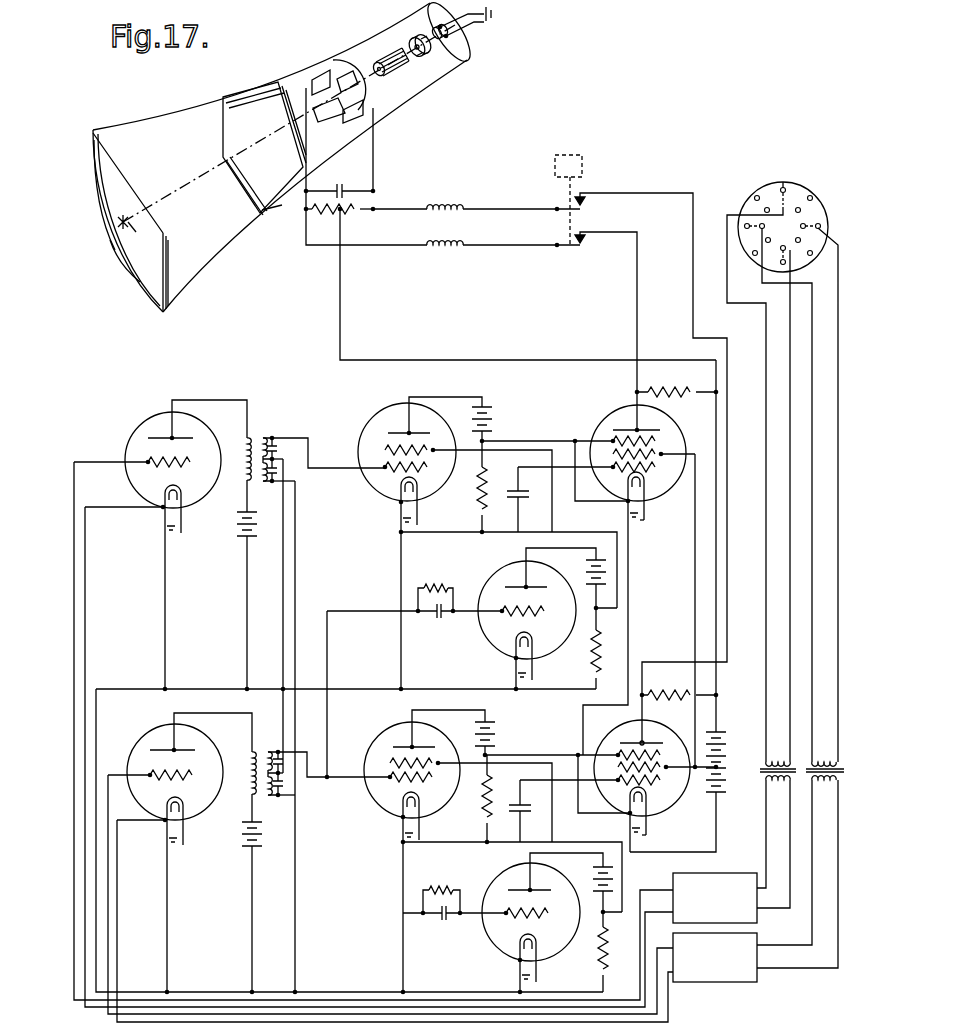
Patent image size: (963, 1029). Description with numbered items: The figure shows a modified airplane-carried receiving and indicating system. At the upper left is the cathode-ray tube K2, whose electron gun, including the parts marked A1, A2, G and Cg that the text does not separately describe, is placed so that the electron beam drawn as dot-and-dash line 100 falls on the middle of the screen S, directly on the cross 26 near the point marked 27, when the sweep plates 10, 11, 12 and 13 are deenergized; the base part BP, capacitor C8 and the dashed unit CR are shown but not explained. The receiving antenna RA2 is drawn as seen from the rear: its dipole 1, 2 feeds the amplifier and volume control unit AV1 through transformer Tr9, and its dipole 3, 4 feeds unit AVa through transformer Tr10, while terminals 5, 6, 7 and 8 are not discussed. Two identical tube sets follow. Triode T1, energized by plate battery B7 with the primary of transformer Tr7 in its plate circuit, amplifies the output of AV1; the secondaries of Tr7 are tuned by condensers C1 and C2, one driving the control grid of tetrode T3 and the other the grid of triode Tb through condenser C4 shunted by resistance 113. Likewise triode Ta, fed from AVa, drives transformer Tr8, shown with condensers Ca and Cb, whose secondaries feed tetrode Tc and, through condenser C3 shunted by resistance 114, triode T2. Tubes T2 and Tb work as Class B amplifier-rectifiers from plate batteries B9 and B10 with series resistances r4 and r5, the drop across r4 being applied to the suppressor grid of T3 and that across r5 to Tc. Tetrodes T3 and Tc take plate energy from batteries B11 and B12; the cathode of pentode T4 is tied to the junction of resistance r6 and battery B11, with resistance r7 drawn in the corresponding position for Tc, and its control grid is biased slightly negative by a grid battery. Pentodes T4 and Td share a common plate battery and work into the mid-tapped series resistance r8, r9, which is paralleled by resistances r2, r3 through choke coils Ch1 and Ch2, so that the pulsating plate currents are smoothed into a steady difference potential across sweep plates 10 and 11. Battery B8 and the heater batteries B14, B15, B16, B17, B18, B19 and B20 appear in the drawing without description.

The cathode-ray tube K2 is at (142, 122).
The second anode plate A2 is at (225, 133).
The electron beam 100 is at (180, 185).
The axis point 27 is at (121, 220).
The cross 26 is at (135, 228).
The screen S is at (136, 266).
The base plate BP is at (277, 208).
The sweep plate 10 is at (311, 86).
The sweep plate 12 is at (350, 75).
The sweep plate 11 is at (363, 107).
The sweep plate 13 is at (327, 116).
The first anode A1 is at (398, 77).
The grid G is at (425, 58).
The cathode Cg is at (448, 38).
The capacitor C8 is at (340, 183).
The resistance unit r2 is at (329, 217).
The resistance unit r3 is at (362, 218).
The choke coil Ch2 is at (476, 197).
The choke coil Ch1 is at (443, 228).
The control relay CR is at (569, 192).
The receiving antenna RA2 is at (797, 163).
The dipole terminal 1 is at (782, 177).
The dipole terminal 2 is at (783, 264).
The dipole terminal 3 is at (747, 228).
The dipole terminal 4 is at (820, 228).
The socket pin 5 is at (757, 198).
The socket pin 6 is at (810, 254).
The socket pin 7 is at (755, 254).
The socket pin 8 is at (810, 198).
The transformer Tr9 is at (765, 835).
The transformer Tr10 is at (800, 865).
The amplifier-volume control unit AV1 is at (727, 874).
The amplifier-volume control unit AVa is at (758, 934).
The triode amplifying tube T1 is at (203, 428).
The transformer Tr7 is at (253, 444).
The condenser C1 is at (278, 449).
The condenser C2 is at (282, 477).
The plate battery B7 is at (240, 527).
The tetrode T3 is at (380, 426).
The plate battery B11 is at (486, 425).
The heater battery B17 is at (417, 517).
The resistance unit r6 is at (471, 487).
The pentode T4 is at (608, 425).
The series resistance r8 is at (677, 385).
The heater battery B19 is at (637, 525).
The triode amplifier T2 is at (498, 573).
The plate battery B9 is at (595, 573).
The series resistance r4 is at (586, 648).
The condenser C3 is at (391, 623).
The resistance unit 114 is at (435, 588).
The heater battery B15 is at (533, 669).
The triode amplifying tube Ta is at (207, 742).
The heater battery B14 is at (181, 841).
The transformer Tr8 is at (259, 757).
The capacitor Ca is at (279, 751).
The capacitor Cb is at (288, 791).
The battery B8 is at (242, 837).
The tetrode Tc is at (388, 734).
The plate battery B12 is at (490, 739).
The heater battery B18 is at (418, 831).
The resistor r7 is at (475, 799).
The pentode Td is at (614, 737).
The series resistance r9 is at (679, 689).
The heater battery B20 is at (646, 833).
The triode amplifier Tb is at (500, 880).
The plate battery B10 is at (597, 881).
The series resistance r5 is at (592, 952).
The condenser C4 is at (432, 927).
The resistance 113 is at (441, 892).
The heater battery B16 is at (536, 971).